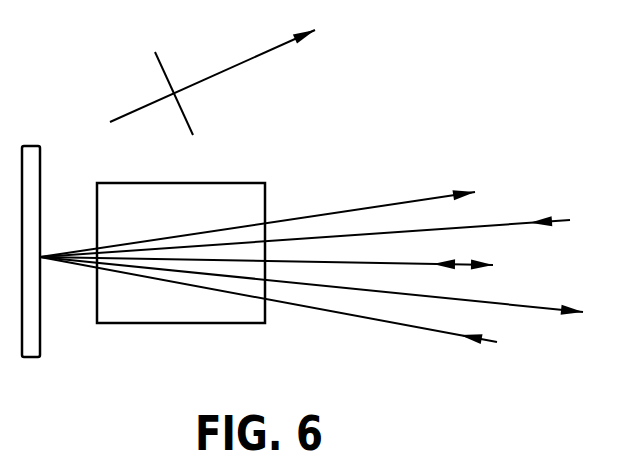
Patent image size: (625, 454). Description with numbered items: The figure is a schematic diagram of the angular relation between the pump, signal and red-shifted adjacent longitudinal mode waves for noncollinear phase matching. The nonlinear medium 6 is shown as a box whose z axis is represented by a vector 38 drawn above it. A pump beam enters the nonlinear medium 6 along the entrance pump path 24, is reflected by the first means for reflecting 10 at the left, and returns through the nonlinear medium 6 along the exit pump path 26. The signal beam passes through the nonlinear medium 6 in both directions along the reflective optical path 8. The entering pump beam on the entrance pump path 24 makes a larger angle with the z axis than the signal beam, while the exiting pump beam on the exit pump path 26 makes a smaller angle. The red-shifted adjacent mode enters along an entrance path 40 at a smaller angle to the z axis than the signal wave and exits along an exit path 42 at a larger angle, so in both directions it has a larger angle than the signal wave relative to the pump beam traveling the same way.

The first means for reflecting 10 is at (41, 153).
The nonlinear medium 6 is at (226, 193).
The exit pump path 26 is at (343, 208).
The entrance path 40 is at (500, 222).
The reflective optical path 8 is at (413, 266).
The exit path 42 is at (518, 308).
The entrance pump path 24 is at (403, 322).
The z axis vector 38 is at (258, 55).